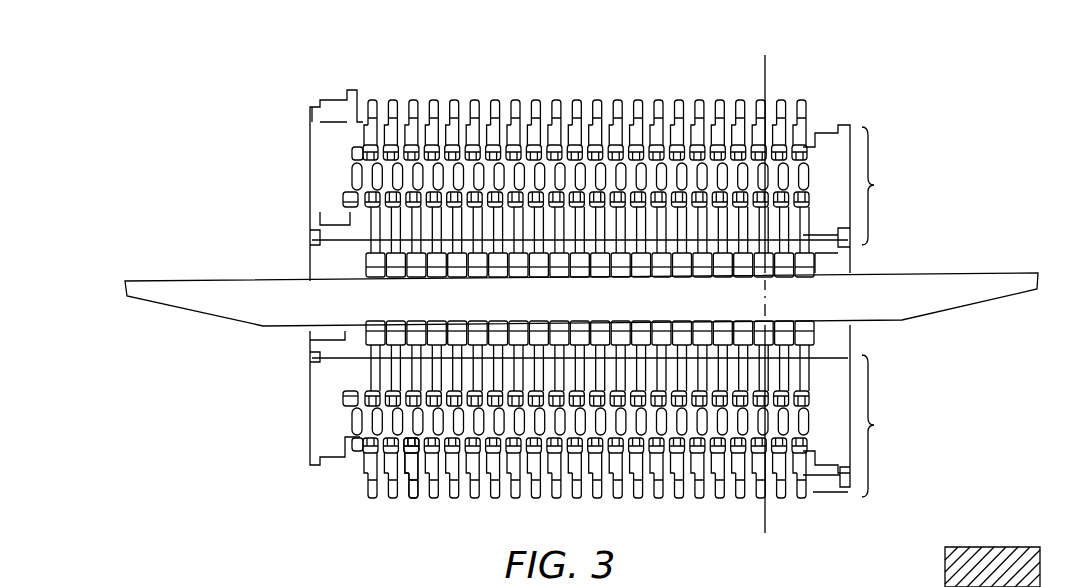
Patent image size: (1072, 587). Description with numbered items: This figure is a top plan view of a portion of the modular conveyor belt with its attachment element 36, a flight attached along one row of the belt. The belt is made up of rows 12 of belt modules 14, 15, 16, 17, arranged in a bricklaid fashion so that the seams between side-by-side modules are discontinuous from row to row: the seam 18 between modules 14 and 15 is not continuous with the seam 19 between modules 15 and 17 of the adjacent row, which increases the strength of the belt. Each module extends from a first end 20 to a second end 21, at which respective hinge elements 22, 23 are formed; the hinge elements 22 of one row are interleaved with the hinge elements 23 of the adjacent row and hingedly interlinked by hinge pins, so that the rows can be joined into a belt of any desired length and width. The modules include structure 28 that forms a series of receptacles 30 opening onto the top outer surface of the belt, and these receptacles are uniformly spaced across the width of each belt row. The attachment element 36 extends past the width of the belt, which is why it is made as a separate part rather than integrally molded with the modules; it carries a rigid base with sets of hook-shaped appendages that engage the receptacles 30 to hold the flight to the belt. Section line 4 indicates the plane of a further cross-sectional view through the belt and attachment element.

The section line 4- 4 is at (702, 533).
The row 12 is at (891, 312).
The belt module 14 is at (318, 148).
The belt module 15 is at (828, 143).
The belt module 16 is at (320, 259).
The belt module 17 is at (835, 264).
The seam 18 is at (481, 370).
The seam 19 is at (559, 333).
The first end 20 is at (361, 497).
The second end 21 is at (369, 100).
The hinge element 22 is at (420, 488).
The hinge element 23 is at (517, 102).
The structure 28 is at (612, 163).
The receptacle 30 is at (353, 178).
The attachment element 36 is at (582, 312).